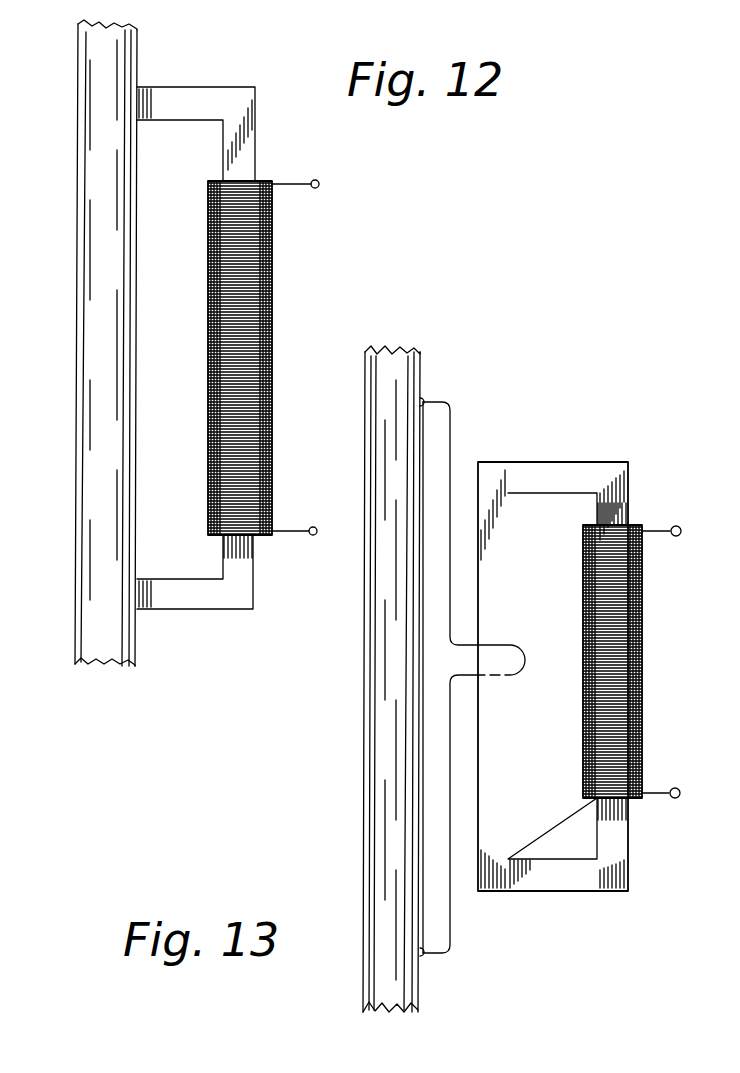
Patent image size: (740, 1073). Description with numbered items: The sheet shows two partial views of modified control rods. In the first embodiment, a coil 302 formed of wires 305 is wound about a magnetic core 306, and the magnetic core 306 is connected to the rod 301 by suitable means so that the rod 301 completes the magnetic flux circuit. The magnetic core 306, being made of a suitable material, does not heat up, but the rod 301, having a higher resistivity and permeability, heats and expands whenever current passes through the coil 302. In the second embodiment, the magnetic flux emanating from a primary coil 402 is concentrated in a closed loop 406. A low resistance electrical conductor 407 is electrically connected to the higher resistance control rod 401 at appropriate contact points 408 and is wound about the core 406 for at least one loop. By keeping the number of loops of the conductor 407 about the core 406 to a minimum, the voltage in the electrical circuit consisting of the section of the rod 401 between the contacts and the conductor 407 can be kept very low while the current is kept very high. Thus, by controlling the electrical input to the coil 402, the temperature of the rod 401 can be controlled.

In FIG. 12, the rod 301 is at (97, 112).
In FIG. 12, the coil 302 is at (273, 268).
In FIG. 12, the wires 305 is at (240, 352).
In FIG. 12, the magnetic core 306 is at (188, 100).
In FIG. 13, the control rod 401 is at (388, 448).
In FIG. 13, the primary coil 402 is at (583, 597).
In FIG. 13, the closed loop 406 is at (573, 470).
In FIG. 13, the low resistance electrical conductor 407 is at (452, 428).
In FIG. 13, the contact points 408 is at (423, 402).